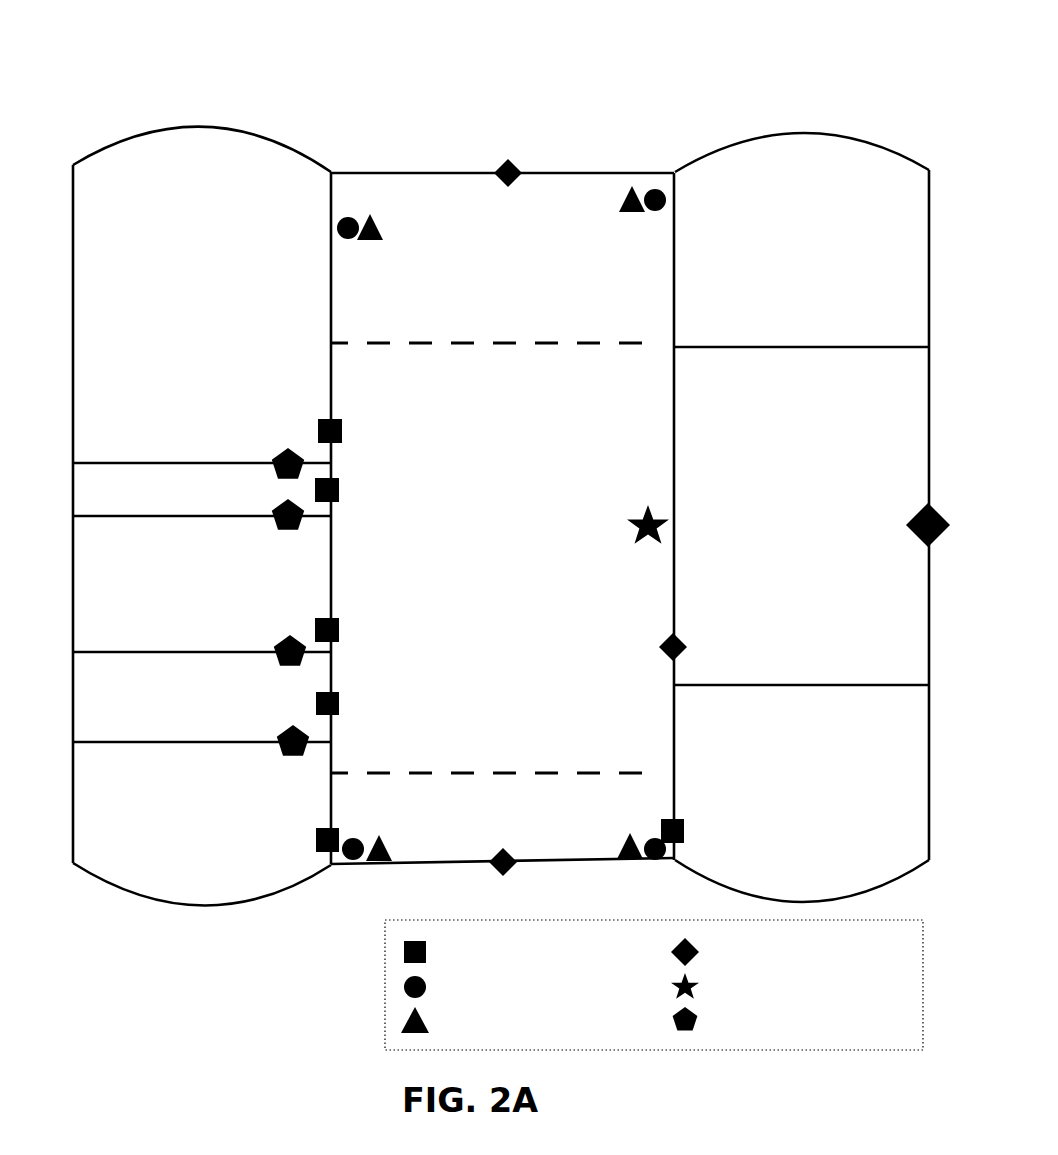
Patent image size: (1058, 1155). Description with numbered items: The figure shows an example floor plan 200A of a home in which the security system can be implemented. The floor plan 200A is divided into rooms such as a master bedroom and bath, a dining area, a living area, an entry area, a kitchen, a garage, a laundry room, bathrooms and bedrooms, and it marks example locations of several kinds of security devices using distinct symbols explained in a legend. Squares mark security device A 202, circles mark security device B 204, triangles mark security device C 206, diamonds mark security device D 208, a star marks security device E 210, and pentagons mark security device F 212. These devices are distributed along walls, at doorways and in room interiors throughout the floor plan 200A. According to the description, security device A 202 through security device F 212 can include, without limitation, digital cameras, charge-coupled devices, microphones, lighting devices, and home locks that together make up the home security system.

The floor plan 200A is at (92, 70).
The security device A 202 is at (499, 691).
The security device B 204 is at (501, 593).
The security device C 206 is at (501, 609).
The security device D 208 is at (719, 562).
The security device E 210 is at (765, 752).
The security device F 212 is at (588, 739).